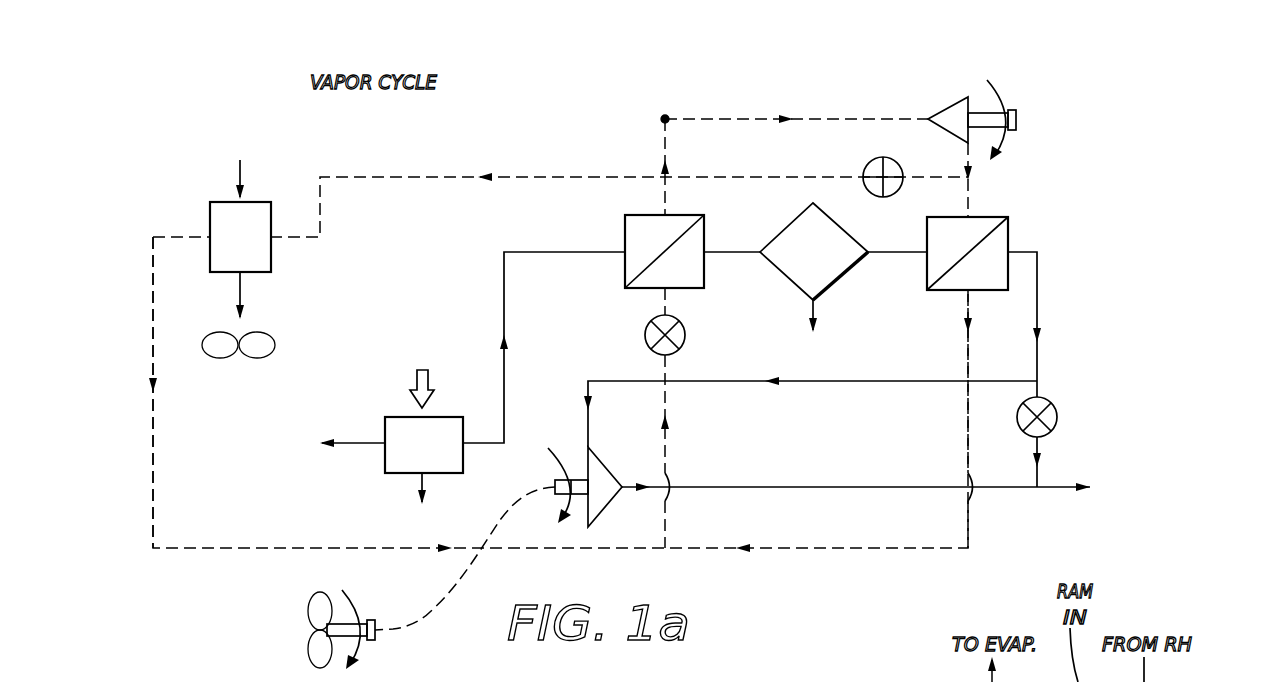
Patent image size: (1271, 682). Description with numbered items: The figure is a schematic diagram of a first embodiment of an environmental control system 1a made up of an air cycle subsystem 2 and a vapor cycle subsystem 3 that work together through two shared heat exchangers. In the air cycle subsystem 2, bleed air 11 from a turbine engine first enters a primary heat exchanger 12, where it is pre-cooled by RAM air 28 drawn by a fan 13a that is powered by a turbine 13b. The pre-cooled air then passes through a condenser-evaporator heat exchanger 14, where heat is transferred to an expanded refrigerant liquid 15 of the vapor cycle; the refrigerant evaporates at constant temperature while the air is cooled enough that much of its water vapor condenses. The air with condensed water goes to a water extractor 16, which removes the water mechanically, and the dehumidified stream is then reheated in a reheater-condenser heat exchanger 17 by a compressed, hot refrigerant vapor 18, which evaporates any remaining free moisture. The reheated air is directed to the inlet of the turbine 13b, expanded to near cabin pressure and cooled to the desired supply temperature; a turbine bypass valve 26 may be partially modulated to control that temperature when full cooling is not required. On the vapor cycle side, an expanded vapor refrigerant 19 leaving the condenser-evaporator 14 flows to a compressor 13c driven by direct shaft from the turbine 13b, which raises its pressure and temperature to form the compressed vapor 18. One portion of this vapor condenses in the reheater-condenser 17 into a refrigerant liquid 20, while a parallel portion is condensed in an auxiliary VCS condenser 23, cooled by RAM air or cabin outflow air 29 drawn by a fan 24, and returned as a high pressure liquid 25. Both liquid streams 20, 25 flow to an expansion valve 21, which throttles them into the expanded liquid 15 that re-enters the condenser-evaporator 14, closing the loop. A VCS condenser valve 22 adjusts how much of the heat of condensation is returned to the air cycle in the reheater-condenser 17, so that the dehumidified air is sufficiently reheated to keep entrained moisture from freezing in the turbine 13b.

The environmental control system 1a is at (1106, 162).
The air cycle subsystem 2 is at (530, 252).
The vapor cycle subsystem 3 is at (392, 175).
The bleed air 11 is at (350, 443).
The primary heat exchanger 12 is at (465, 468).
The fan 13a is at (310, 608).
The turbine 13b is at (603, 462).
The compressor 13c is at (935, 113).
The condenser-evaporator heat exchanger 14 is at (625, 235).
The expanded refrigerant liquid 15 is at (668, 303).
The water extractor 16 is at (797, 222).
The reheater-condenser heat exchanger 17 is at (1010, 237).
The compressed refrigerant vapor 18 is at (991, 159).
The expanded vapor refrigerant 19 is at (718, 118).
The refrigerant liquid 20 is at (965, 312).
The expansion valve 21 is at (647, 330).
The VCS condenser valve 22 is at (868, 163).
The VCS condenser 23 is at (210, 215).
The fan 24 is at (220, 358).
The high pressure liquid 25 is at (153, 340).
The turbine bypass valve 26 is at (1052, 402).
The RAM air 28 is at (417, 380).
The RAM air or cabin outflow air 29 is at (240, 170).